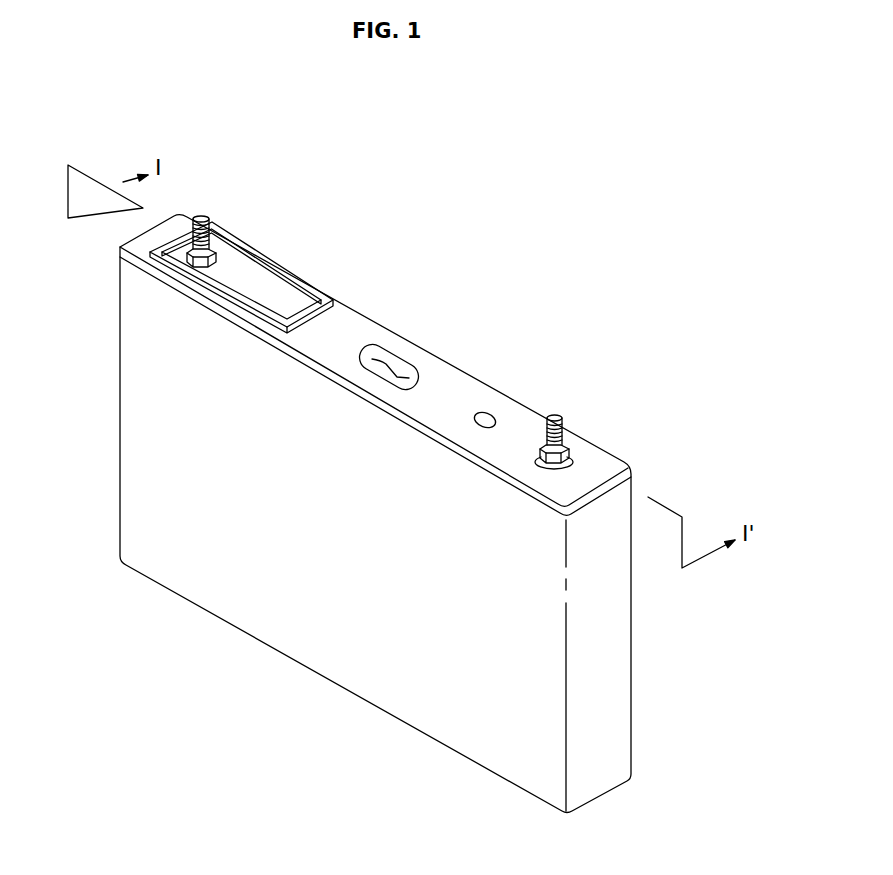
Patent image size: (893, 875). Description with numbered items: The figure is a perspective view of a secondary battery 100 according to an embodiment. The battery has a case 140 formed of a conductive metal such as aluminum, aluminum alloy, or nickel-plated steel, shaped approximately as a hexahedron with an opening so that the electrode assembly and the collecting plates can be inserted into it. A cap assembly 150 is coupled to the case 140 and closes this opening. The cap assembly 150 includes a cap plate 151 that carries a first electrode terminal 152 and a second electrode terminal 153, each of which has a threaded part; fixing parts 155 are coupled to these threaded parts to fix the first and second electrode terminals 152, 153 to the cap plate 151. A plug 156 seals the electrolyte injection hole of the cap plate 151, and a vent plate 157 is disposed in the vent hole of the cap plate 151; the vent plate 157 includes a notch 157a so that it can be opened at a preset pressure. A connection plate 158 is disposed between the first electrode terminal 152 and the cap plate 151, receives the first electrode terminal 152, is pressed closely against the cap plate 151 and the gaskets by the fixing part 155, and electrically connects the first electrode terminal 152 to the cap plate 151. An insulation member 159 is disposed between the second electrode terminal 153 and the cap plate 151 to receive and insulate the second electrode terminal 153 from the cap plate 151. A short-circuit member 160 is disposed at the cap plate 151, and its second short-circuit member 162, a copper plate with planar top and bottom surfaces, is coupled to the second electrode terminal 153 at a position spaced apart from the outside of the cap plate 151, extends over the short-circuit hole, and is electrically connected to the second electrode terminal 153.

The secondary battery 100 is at (357, 468).
The case 140 is at (322, 661).
The cap assembly 150 is at (470, 374).
The cap plate 151 is at (350, 323).
The first electrode terminal 152 is at (553, 416).
The second electrode terminal 153 is at (204, 218).
The fixing part 155 is at (190, 260).
The plug 156 is at (493, 413).
The vent plate 157 is at (390, 352).
The notch 157a is at (397, 367).
The connection plate 158 is at (573, 458).
The insulation member 159 is at (295, 284).
The short-circuit member 160 is at (262, 275).
The second short-circuit member 162 is at (230, 258).